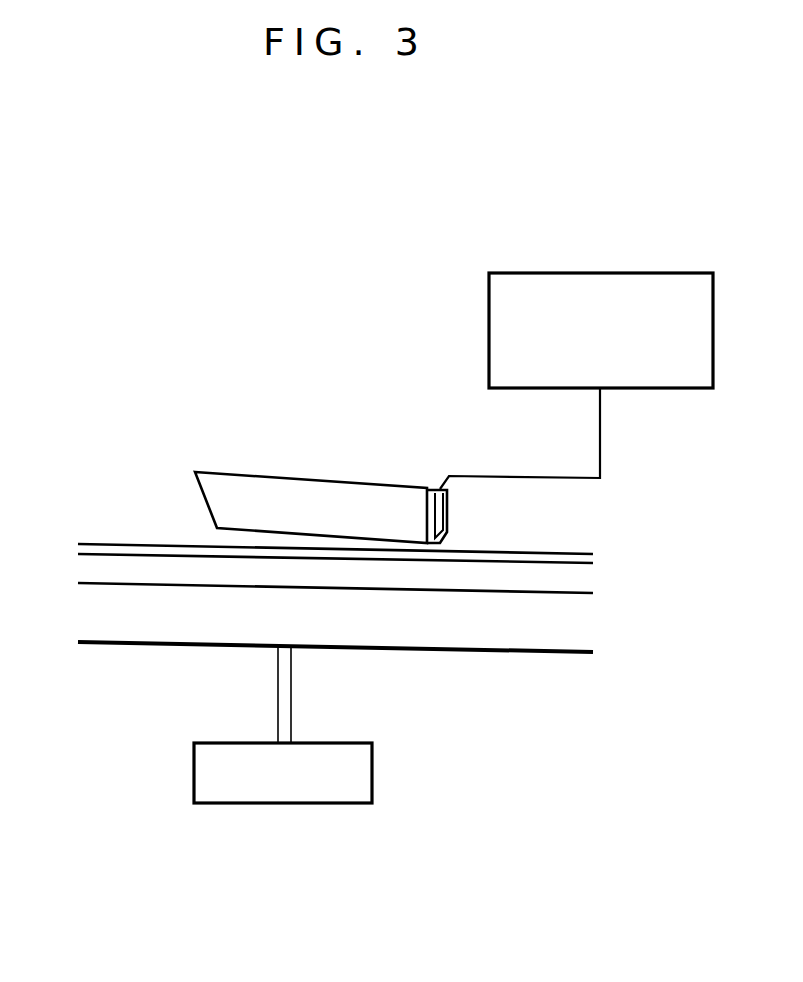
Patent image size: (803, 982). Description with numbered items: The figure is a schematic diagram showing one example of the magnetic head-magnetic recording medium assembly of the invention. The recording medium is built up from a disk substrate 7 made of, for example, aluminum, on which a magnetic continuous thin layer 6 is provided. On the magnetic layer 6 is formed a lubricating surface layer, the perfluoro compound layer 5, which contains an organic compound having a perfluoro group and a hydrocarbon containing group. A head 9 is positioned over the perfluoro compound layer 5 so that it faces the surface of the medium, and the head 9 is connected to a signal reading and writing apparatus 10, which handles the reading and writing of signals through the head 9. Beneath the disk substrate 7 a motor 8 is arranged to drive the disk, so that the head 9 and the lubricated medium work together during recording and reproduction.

The perfluoro compound layer 5 is at (590, 560).
The magnetic layer 6 is at (90, 570).
The disk substrate 7 is at (580, 627).
The motor 8 is at (373, 776).
The head 9 is at (215, 472).
The signal reading and writing apparatus 10 is at (489, 328).